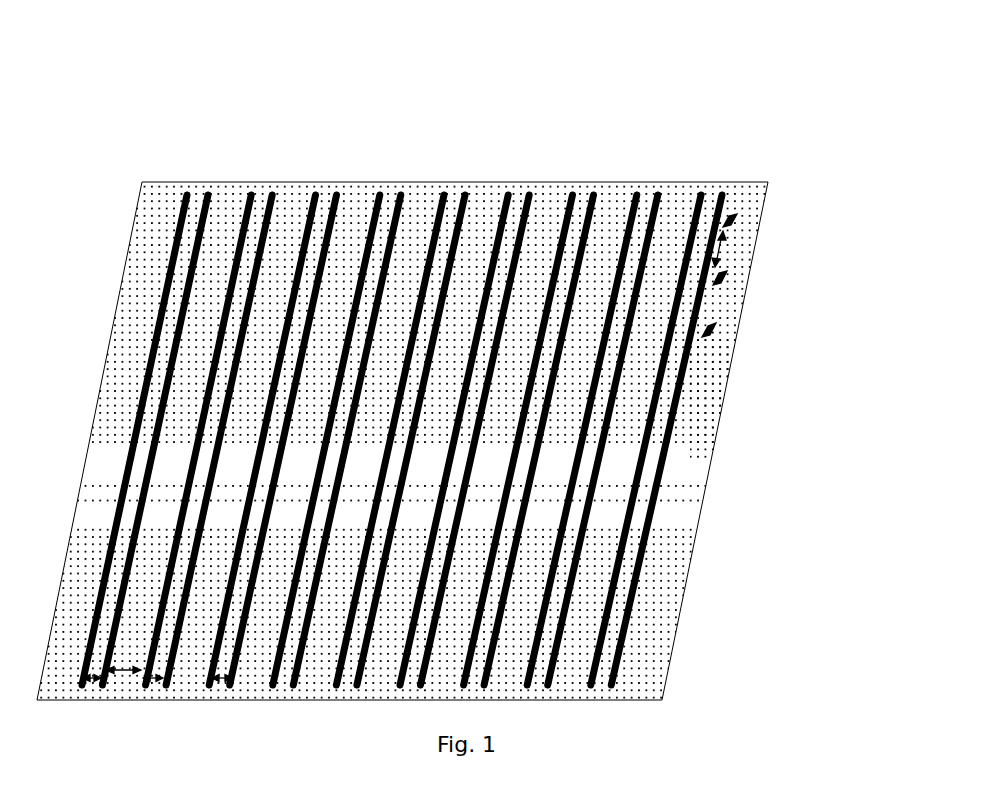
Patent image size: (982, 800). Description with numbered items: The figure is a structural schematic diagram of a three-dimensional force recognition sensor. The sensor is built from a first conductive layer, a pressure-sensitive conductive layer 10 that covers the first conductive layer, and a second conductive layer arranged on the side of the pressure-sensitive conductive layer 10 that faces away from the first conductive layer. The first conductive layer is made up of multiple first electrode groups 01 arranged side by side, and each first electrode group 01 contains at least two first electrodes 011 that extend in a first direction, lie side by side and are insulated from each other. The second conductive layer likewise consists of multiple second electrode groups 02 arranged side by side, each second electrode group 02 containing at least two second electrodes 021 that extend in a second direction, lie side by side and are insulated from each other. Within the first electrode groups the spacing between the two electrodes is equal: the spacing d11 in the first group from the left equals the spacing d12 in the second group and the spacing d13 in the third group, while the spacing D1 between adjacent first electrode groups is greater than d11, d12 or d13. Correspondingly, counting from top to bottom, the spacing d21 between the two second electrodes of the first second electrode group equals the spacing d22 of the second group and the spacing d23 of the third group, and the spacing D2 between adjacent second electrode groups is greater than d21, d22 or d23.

The pressure-sensitive conductive layer 10 is at (748, 193).
The first electrode group 01 is at (402, 351).
The first electrode 011 is at (257, 83).
The second electrode group 02 is at (491, 441).
The second electrode 021 is at (708, 373).
The spacing between the two first electrodes in the first group d11 is at (96, 691).
The spacing between the two first electrodes in the second group d12 is at (156, 691).
The spacing between the two first electrodes in the third group d13 is at (226, 691).
The spacing between adjacent first electrode groups D1 is at (123, 682).
The spacing between the two second electrodes in the first group d21 is at (750, 220).
The spacing between the two second electrodes in the second group d22 is at (739, 275).
The spacing between the two second electrodes in the third group d23 is at (729, 328).
The spacing between adjacent second electrode groups D2 is at (734, 249).